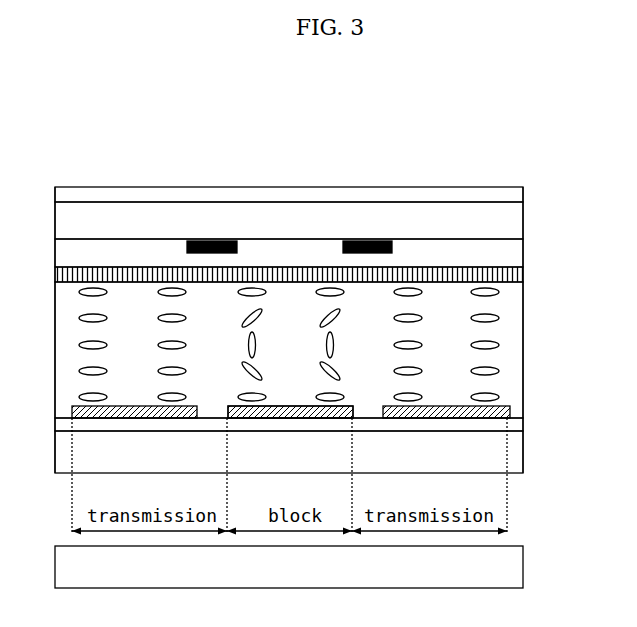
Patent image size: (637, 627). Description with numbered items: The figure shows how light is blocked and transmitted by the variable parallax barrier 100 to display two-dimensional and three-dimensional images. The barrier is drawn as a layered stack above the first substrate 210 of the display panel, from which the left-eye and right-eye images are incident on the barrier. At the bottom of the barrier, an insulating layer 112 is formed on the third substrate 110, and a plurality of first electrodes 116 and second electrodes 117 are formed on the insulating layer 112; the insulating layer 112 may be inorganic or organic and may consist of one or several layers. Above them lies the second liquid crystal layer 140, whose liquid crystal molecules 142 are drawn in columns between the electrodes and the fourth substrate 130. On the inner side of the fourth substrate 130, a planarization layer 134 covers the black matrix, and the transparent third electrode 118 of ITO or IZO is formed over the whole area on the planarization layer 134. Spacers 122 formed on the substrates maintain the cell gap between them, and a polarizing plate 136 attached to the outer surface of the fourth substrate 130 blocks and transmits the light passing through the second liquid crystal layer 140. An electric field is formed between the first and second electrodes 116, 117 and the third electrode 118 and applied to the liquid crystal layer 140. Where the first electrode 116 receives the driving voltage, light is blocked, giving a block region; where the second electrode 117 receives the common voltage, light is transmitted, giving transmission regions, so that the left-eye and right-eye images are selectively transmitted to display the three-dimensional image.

The variable parallax barrier 100 is at (520, 167).
The third substrate 110 is at (518, 455).
The insulating layer 112 is at (523, 428).
The first electrode 116 is at (510, 410).
The second electrode 117 is at (275, 405).
The third electrode 118 is at (523, 276).
The spacer 122 is at (370, 241).
The fourth substrate 130 is at (523, 222).
The planarization layer 134 is at (523, 255).
The polarizing plate 136 is at (523, 195).
The second liquid crystal layer 140 is at (517, 307).
The liquid crystal molecules 142 is at (499, 344).
The first substrate 210 is at (523, 571).